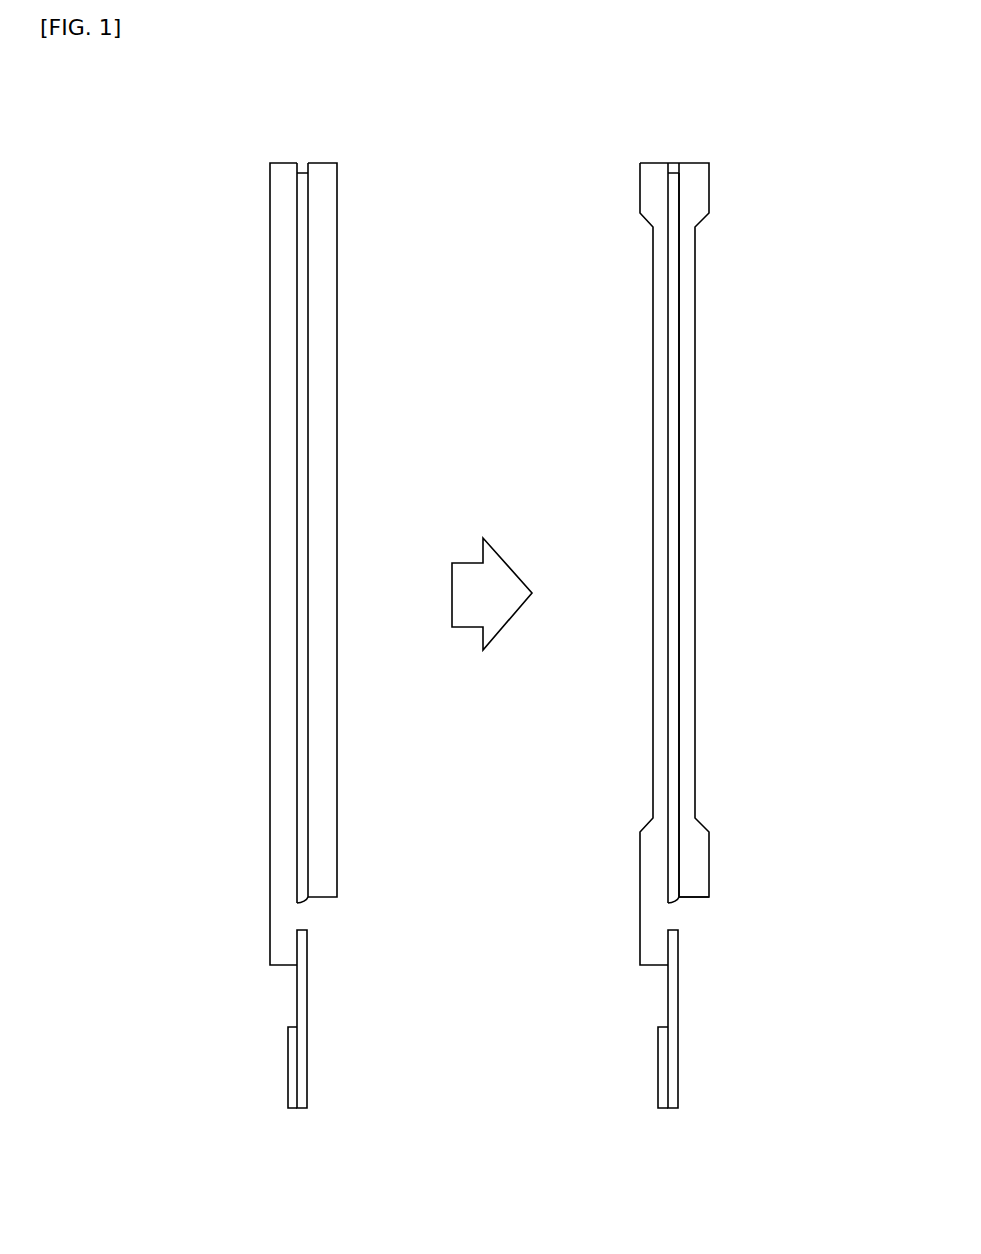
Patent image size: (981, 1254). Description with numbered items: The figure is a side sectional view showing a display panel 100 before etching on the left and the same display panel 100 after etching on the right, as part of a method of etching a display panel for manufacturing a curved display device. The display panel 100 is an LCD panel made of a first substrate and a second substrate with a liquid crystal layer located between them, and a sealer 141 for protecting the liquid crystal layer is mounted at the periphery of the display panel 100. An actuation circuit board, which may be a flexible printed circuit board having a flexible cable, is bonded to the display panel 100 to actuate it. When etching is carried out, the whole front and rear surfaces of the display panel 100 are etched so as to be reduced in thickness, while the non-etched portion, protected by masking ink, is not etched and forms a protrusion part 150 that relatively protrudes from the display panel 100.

The display panel 100 is at (243, 94).
The sealer 141 is at (305, 905).
The protrusion part 150 is at (709, 189).